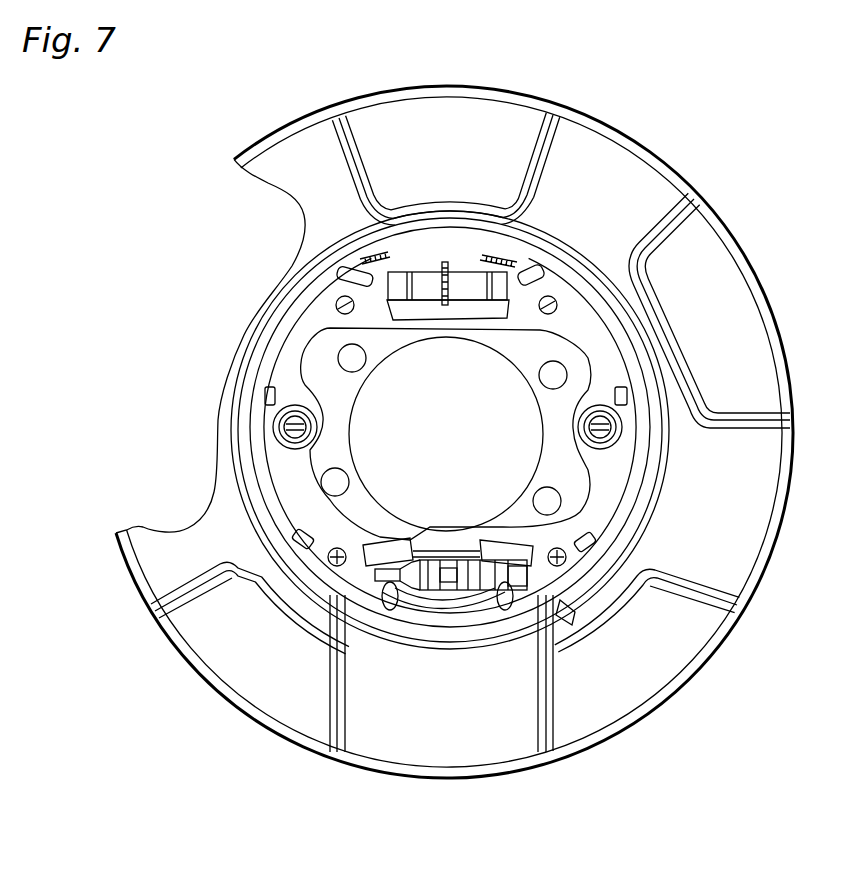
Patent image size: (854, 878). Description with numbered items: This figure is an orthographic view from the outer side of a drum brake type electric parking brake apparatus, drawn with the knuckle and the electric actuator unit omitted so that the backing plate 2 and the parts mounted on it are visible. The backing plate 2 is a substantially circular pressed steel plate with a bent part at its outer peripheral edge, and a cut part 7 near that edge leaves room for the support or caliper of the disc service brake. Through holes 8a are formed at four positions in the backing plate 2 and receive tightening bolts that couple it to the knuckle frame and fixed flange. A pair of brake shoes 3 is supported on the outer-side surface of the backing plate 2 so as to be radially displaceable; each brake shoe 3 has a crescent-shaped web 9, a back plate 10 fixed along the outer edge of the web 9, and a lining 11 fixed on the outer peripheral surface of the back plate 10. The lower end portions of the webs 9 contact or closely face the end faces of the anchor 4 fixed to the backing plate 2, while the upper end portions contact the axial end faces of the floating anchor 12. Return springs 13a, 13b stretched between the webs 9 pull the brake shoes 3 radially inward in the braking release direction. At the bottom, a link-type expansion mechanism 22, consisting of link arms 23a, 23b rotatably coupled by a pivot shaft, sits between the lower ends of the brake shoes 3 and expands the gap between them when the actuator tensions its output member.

The backing plate 2 is at (597, 168).
The brake shoe 3 is at (280, 457).
The anchor 4 is at (477, 610).
The cut part 7 is at (263, 185).
The through hole 8a is at (342, 356).
The web 9 is at (283, 482).
The back plate 10 is at (305, 520).
The lining 11 is at (270, 498).
The floating anchor 12 is at (467, 290).
The return spring 13a is at (438, 308).
The return spring 13b is at (570, 613).
The link-type expansion mechanism 22 is at (404, 600).
The link arm 23a is at (375, 603).
The link arm 23b is at (503, 600).